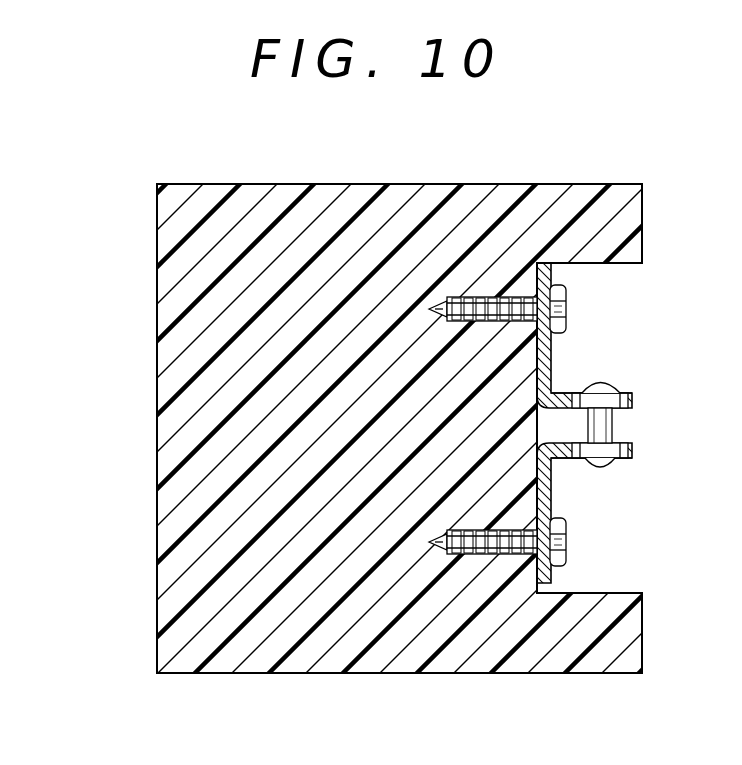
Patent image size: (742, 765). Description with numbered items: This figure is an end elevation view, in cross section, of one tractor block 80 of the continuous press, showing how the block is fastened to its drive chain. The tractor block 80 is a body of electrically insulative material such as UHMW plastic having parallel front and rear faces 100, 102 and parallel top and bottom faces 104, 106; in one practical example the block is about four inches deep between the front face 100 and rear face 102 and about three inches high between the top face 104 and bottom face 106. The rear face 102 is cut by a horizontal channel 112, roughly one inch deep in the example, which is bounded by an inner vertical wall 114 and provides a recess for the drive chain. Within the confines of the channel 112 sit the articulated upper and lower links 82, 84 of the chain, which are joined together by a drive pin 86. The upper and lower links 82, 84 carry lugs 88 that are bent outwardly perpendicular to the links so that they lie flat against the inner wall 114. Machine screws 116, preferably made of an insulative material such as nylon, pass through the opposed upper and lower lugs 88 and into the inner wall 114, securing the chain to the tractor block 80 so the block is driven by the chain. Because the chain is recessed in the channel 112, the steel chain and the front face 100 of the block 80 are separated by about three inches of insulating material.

The tractor block 80 is at (404, 170).
The upper link 82 is at (633, 396).
The lower link 84 is at (633, 452).
The drive pin 86 is at (612, 422).
The lug 88 is at (552, 352).
The front face 100 is at (157, 207).
The rear face 102 is at (642, 213).
The top face 104 is at (300, 184).
The bottom face 106 is at (465, 673).
The horizontal channel 112 is at (598, 265).
The inner vertical wall 114 is at (562, 400).
The machine screw 116 is at (567, 311).